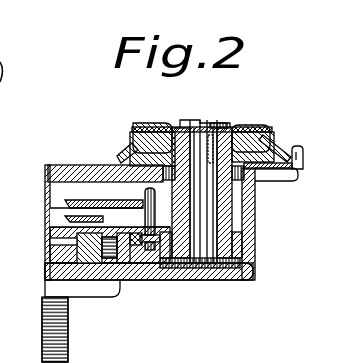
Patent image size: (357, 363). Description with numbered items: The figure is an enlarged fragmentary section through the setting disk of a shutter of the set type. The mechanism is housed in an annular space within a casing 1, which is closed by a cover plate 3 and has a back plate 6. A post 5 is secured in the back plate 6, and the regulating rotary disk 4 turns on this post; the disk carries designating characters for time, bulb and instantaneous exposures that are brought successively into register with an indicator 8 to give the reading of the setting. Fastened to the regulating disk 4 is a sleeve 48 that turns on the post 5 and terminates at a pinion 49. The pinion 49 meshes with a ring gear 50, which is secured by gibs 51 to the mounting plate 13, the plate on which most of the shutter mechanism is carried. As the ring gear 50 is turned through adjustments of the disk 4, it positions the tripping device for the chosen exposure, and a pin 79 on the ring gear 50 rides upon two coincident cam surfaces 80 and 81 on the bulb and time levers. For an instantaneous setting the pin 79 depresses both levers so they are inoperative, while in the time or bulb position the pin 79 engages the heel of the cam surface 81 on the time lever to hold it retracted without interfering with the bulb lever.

The casing 1 is at (250, 222).
The cover plate 3 is at (62, 175).
The rotary disk 4 is at (263, 128).
The post 5 is at (208, 220).
The back plate 6 is at (183, 280).
The indicator 8 is at (303, 156).
The mounting plate 13 is at (90, 258).
The sleeve 48 is at (227, 194).
The pinion 49 is at (238, 240).
The ring gear 50 is at (167, 258).
The gibs 51 is at (131, 221).
The pin 79 is at (148, 186).
The cam surface 80 is at (135, 200).
The cam surface 81 is at (62, 207).